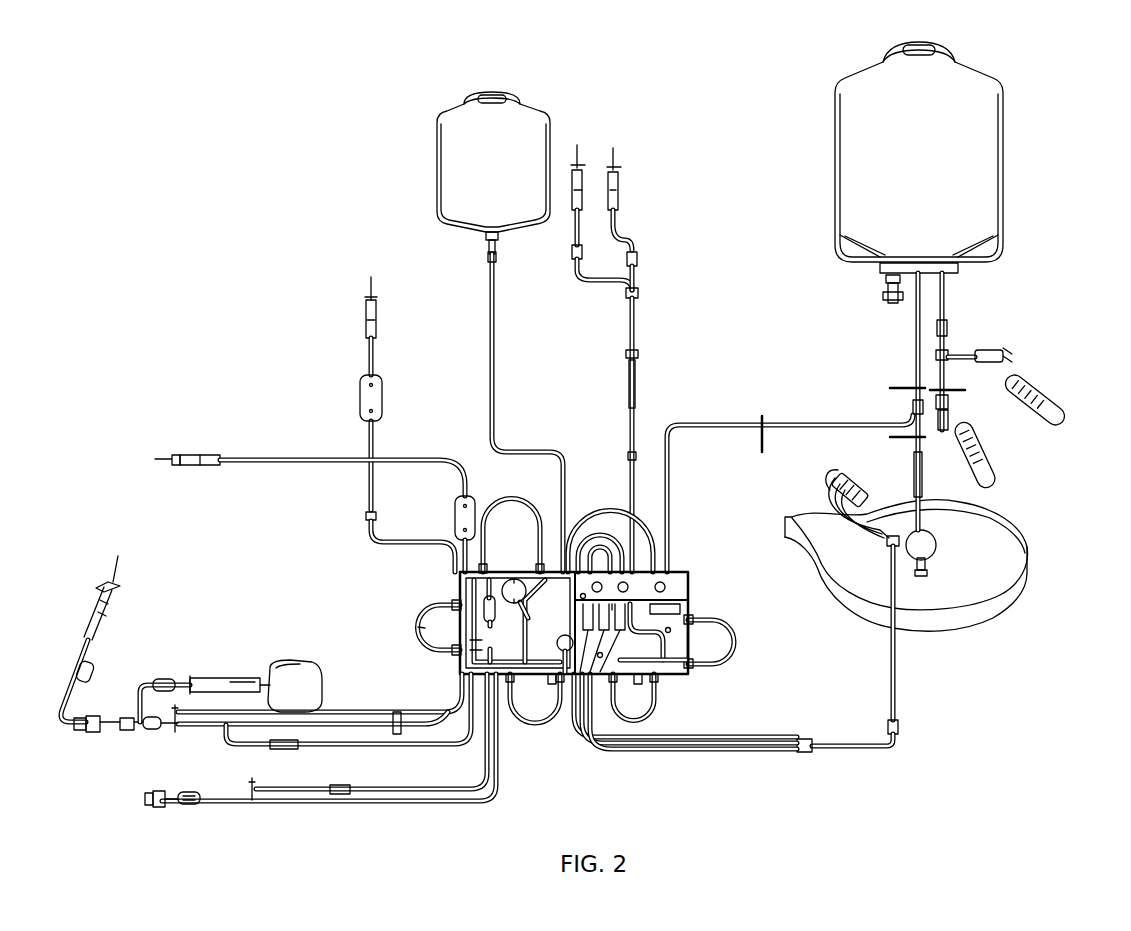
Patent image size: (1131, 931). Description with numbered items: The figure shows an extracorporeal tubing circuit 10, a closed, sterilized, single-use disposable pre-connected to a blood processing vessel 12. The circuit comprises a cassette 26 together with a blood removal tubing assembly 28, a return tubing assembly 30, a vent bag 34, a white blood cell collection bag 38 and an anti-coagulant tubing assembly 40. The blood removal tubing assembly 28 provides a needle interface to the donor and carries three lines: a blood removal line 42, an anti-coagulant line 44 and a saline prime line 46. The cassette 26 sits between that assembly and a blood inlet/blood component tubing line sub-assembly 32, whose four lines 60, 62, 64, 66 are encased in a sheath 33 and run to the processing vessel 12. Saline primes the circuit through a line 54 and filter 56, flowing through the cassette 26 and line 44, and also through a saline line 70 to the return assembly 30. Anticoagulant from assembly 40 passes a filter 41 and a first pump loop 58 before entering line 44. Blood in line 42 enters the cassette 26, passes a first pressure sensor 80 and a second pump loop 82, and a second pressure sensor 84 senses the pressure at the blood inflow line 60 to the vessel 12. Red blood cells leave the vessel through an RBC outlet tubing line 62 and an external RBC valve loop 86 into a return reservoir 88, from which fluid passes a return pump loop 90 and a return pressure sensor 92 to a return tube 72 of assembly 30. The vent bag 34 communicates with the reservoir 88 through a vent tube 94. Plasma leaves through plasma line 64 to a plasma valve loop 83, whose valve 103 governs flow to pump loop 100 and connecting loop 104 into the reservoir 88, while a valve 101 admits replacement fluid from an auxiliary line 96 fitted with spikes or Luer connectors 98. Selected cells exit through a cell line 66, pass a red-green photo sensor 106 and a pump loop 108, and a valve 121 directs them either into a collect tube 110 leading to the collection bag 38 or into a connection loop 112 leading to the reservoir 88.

The extracorporeal tubing circuit 10 is at (262, 352).
The blood processing vessel 12 is at (1022, 620).
The cassette 26 is at (395, 623).
The blood removal tubing assembly 28 is at (262, 760).
The return tubing assembly 30 is at (310, 808).
The blood inlet/blood component tubing line sub-assembly 32 is at (722, 770).
The sheath 33 is at (897, 680).
The vent bag 34 is at (437, 168).
The white blood cell collection bag 38 is at (1003, 170).
The anti-coagulant tubing assembly 40 is at (300, 463).
The filter 41 is at (455, 518).
The blood removal line 42 is at (470, 735).
The anti-coagulant line 44 is at (420, 716).
The saline prime line 46 is at (458, 708).
The saline line 54 is at (376, 363).
The filter 56 is at (383, 400).
The first pump loop 58 is at (420, 628).
The blood inflow line 60 is at (822, 520).
The RBC outlet tubing line 62 is at (865, 516).
The plasma line 64 is at (882, 538).
The cell line 66 is at (862, 530).
The saline line 70 is at (405, 786).
The return tube 72 is at (428, 803).
The first pressure sensor 80 is at (445, 605).
The second pump loop 82 is at (540, 722).
The plasma valve loop 83 is at (620, 525).
The second pressure sensor 84 is at (551, 681).
The external RBC valve loop 86 is at (588, 530).
The return reservoir 88 is at (560, 624).
The return pump loop 90 is at (507, 508).
The return pressure sensor 92 is at (514, 579).
The vent tube 94 is at (497, 352).
The auxiliary line 96 is at (637, 332).
The spikes or Luer connectors 98 is at (620, 190).
The pump loop 100 is at (650, 712).
The valve 101 is at (628, 588).
The valve 103 is at (602, 585).
The connecting loop or line 104 is at (618, 556).
The red-green photo sensor 106 is at (640, 680).
The pump loop or line 108 is at (735, 640).
The collect tube 110 is at (722, 424).
The connection loop or line 112 is at (650, 528).
The valve 121 is at (665, 589).